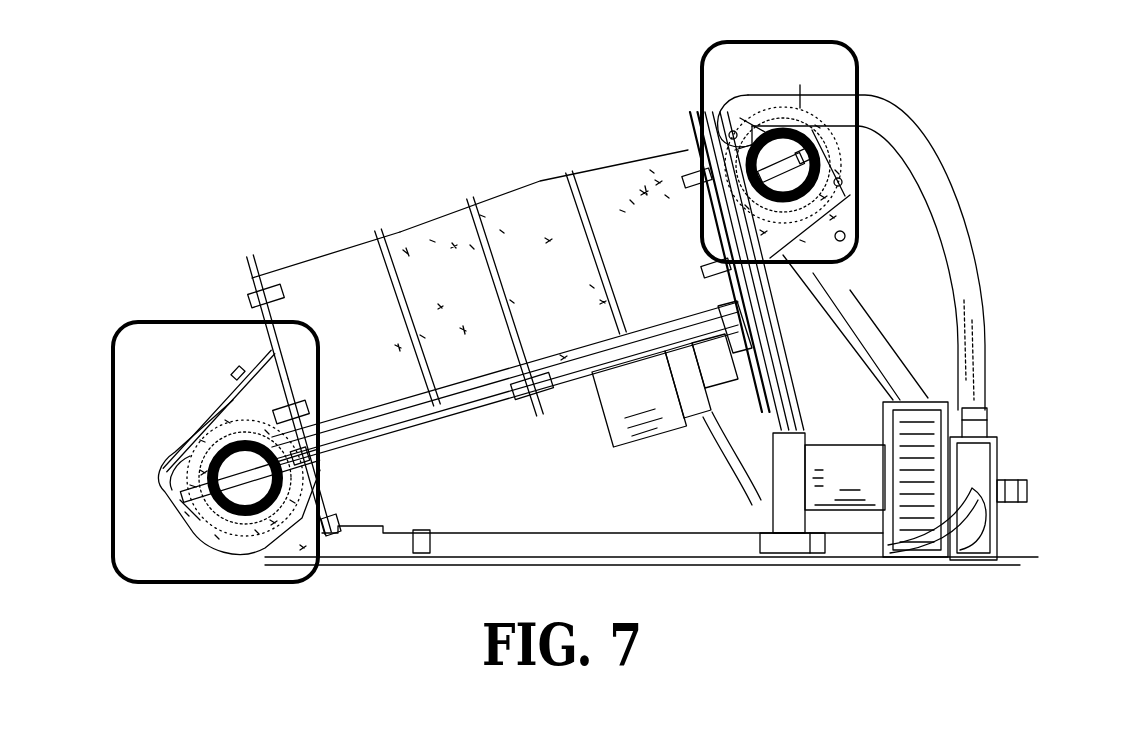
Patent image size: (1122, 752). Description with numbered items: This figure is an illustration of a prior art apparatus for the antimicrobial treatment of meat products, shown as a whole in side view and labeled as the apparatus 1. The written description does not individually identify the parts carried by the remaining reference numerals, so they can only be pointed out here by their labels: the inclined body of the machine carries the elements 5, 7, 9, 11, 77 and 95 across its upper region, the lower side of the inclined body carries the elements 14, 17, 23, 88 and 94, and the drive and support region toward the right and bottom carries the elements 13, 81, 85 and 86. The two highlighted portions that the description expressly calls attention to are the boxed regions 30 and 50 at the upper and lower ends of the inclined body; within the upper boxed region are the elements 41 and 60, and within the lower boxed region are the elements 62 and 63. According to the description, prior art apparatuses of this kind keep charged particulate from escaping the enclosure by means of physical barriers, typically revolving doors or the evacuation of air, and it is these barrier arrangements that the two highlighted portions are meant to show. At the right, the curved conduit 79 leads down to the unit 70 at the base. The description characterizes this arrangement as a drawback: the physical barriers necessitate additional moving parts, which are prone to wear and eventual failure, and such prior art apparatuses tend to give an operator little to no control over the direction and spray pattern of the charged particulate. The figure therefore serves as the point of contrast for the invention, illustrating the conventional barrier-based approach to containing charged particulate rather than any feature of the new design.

The vibratory screening apparatus 1 is at (398, 93).
The screen deck 5 is at (630, 124).
The screen frame 7 is at (308, 260).
The cross rails 9 is at (381, 230).
The material being screened 11 is at (440, 305).
The drive motor assembly 13 is at (716, 450).
The lower end rail 14 is at (335, 480).
The upper end rail 17 is at (300, 345).
The fasteners 23 is at (285, 297).
The upper mount assembly 30 is at (888, 85).
The mount bracket 41 is at (757, 96).
The lower mount assembly 50 is at (150, 510).
The pivot pin 60 is at (850, 239).
The resilient bushing 62 is at (245, 557).
The bushing housing 63 is at (190, 553).
The control unit 70 is at (1040, 458).
The screen media 77 is at (660, 185).
The flexible conduit 79 is at (936, 168).
The base frame 81 is at (587, 533).
The discharge end rail 85 is at (805, 349).
The motor housing 86 is at (612, 395).
The longitudinal support bars 88 is at (462, 420).
The clamp 94 is at (522, 405).
The center rail 95 is at (472, 196).